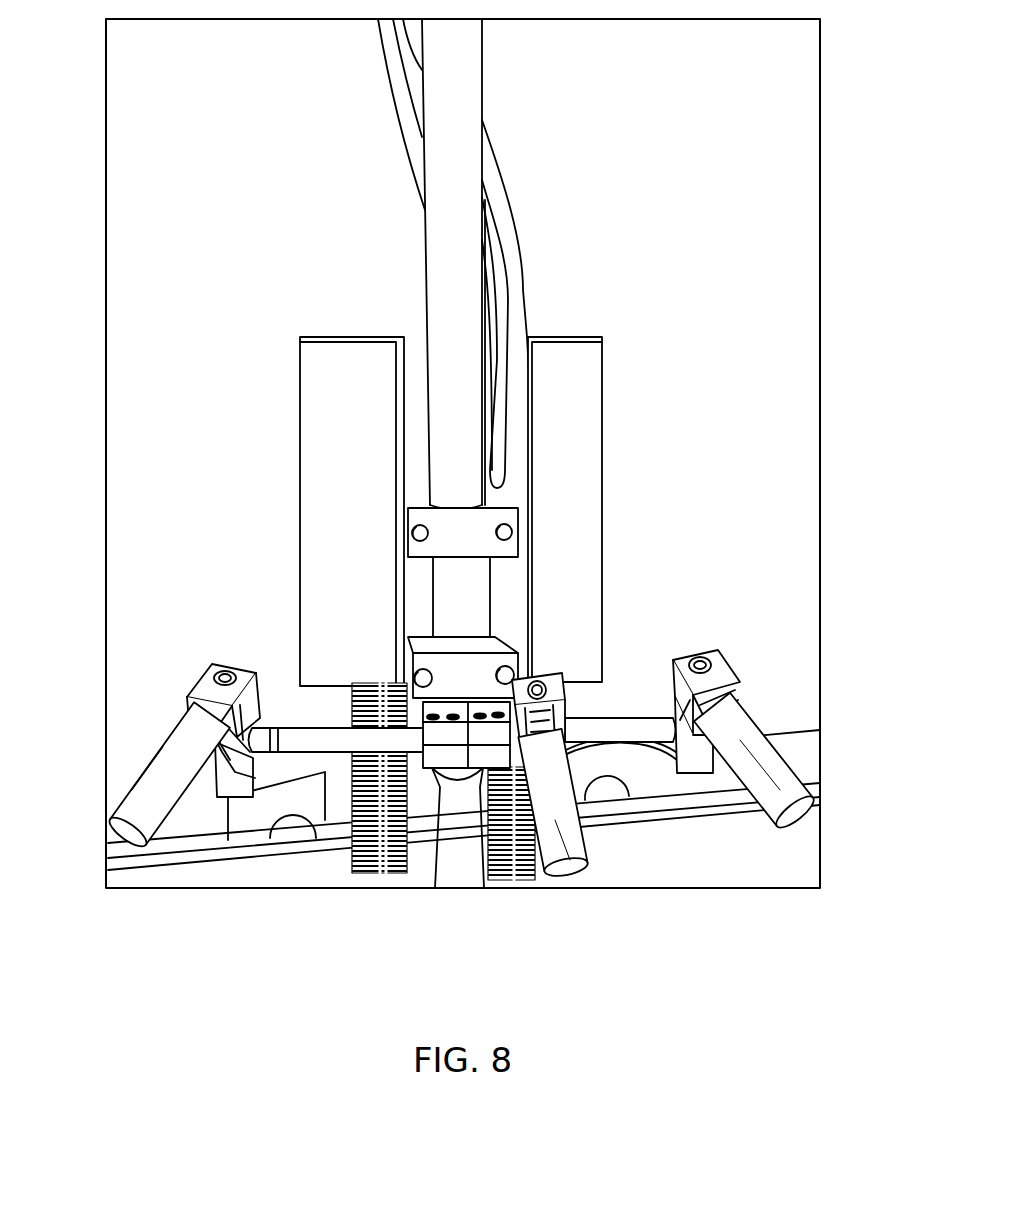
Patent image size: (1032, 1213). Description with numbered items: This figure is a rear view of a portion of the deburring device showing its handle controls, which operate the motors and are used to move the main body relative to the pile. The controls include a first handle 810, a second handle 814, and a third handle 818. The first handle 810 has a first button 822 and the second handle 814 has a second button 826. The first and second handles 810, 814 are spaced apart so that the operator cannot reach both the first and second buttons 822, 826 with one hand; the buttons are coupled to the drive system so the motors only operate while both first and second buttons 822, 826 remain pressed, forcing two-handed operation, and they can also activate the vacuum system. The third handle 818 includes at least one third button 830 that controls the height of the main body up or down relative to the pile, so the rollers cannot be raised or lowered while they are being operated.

The first handle 810 is at (172, 773).
The second handle 814 is at (780, 770).
The third handle 818 is at (555, 818).
The first button 822 is at (215, 692).
The second button 826 is at (743, 683).
The third button 830 is at (515, 712).